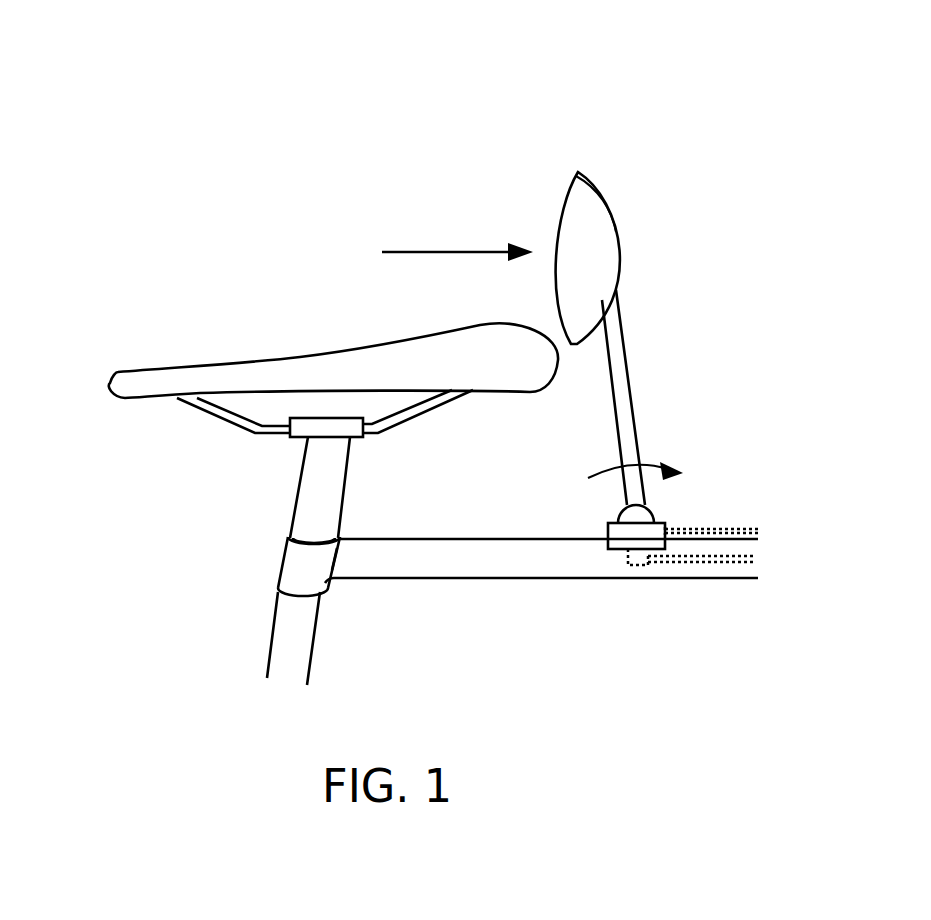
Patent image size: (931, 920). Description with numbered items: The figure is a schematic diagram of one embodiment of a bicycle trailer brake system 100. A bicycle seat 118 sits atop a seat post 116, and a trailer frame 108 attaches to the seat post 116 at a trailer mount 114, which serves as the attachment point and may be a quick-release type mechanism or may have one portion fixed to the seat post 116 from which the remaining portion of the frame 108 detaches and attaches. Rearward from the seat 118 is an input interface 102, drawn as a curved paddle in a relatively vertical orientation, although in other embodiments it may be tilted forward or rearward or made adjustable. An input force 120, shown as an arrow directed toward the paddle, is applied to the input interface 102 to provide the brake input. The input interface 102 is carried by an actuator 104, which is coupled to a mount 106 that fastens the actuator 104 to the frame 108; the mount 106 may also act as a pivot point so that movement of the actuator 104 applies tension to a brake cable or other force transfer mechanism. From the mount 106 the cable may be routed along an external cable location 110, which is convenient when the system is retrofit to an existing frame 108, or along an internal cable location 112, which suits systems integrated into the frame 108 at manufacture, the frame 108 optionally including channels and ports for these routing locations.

The bicycle trailer brake system 100 is at (158, 60).
The input interface 102 is at (556, 193).
The actuator 104 is at (638, 412).
The mount 106 is at (655, 512).
The trailer frame 108 is at (493, 580).
The external cable location 110 is at (728, 527).
The internal cable location 112 is at (757, 555).
The trailer mount 114 is at (283, 562).
The seat post 116 is at (300, 492).
The seat 118 is at (178, 362).
The input force 120 is at (413, 250).